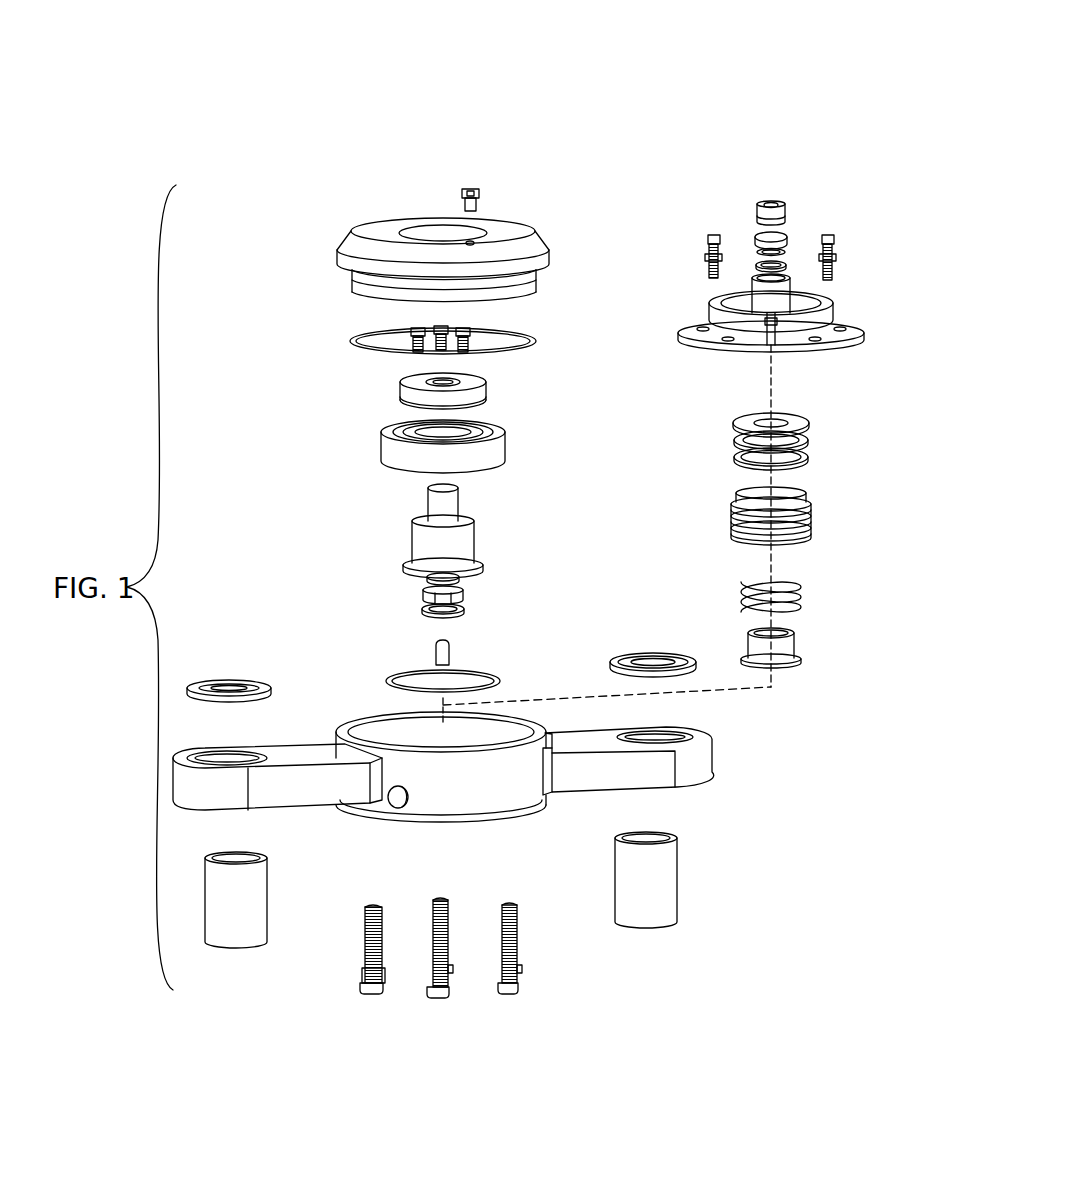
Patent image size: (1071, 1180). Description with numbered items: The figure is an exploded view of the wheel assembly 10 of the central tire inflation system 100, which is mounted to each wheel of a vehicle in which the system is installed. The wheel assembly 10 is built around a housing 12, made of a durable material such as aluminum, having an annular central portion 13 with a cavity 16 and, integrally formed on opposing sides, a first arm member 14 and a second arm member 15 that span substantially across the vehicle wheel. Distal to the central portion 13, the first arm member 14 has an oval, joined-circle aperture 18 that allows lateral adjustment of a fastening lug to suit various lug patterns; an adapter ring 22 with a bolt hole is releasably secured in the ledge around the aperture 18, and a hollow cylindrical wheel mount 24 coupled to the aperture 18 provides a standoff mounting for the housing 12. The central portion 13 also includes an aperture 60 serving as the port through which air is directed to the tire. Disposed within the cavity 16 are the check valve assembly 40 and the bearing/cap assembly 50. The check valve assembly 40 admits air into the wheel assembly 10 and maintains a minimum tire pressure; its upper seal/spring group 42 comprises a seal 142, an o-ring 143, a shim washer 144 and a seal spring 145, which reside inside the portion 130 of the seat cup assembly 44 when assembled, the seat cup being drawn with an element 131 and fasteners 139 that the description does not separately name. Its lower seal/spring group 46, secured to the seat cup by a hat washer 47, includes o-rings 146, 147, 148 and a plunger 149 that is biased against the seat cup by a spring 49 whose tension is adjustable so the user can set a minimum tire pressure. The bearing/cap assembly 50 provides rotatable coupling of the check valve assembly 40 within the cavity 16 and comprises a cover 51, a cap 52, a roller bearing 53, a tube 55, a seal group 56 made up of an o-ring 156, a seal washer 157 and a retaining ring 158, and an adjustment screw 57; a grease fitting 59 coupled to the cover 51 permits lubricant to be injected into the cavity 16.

The wheel assembly 10 is at (523, 133).
The central tire inflation system 100 is at (690, 88).
The housing 12 is at (515, 840).
The central portion 13 is at (497, 798).
The first arm member 14 is at (643, 773).
The second arm member 15 is at (315, 798).
The cavity 16 is at (483, 727).
The aperture 18 is at (676, 736).
The adapter ring 22 is at (680, 658).
The wheel mount 24 is at (665, 902).
The check valve assembly 40 is at (858, 178).
The upper seal/spring group 42 is at (750, 272).
The seat cup assembly 44 is at (848, 335).
The lower seal/spring group 46 is at (723, 408).
The hat washer 47 is at (782, 653).
The spring 49 is at (741, 596).
The bearing/cap assembly 50 is at (301, 200).
The cover 51 is at (507, 230).
The cap 52 is at (470, 395).
The roller bearing 53 is at (490, 457).
The tube 55 is at (460, 545).
The seal group 56 is at (480, 573).
The adjustment screw 57 is at (446, 653).
The grease fitting 59 is at (472, 190).
The aperture 60 is at (392, 808).
The portion of the seat cup 130 is at (783, 304).
The collar ring 131 is at (745, 291).
The screws 139 is at (824, 252).
The seal 142 is at (775, 214).
The o-ring 143 is at (788, 238).
The shim washer 144 is at (786, 252).
The seal spring 145 is at (787, 266).
The o-ring 146 is at (800, 420).
The o-ring 147 is at (805, 438).
The o-ring 148 is at (805, 455).
The plunger 149 is at (807, 532).
The o-ring 156 is at (428, 577).
The seal washer 157 is at (424, 589).
The retaining ring 158 is at (424, 609).